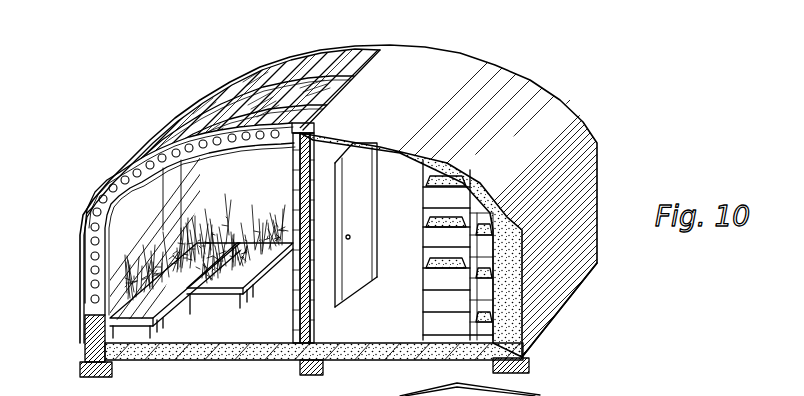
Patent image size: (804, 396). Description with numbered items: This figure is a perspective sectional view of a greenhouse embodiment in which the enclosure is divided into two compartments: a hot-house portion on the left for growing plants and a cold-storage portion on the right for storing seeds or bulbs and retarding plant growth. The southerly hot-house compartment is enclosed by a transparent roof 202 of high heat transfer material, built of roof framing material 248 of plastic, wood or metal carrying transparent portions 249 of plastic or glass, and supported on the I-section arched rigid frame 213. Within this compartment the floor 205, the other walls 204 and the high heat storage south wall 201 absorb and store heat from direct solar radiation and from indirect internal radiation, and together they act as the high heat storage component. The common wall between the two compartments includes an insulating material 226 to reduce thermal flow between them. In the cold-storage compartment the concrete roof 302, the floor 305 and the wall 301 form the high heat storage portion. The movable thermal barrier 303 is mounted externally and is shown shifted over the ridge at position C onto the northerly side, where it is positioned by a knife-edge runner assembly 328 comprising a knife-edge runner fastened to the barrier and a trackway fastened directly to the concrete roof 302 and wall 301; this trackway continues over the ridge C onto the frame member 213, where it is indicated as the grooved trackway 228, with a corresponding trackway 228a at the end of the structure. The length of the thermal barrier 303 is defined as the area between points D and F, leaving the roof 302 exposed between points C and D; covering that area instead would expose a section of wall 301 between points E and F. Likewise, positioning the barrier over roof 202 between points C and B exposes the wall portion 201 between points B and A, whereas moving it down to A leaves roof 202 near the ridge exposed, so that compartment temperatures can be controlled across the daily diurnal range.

The high heat storage south wall 201 is at (107, 333).
The roof 202 is at (258, 76).
The other walls 204 is at (292, 268).
The floor 205 is at (178, 344).
The I-section arched rigid frame 213 is at (93, 194).
The insulating material 226 is at (308, 318).
The grooved trackway 228 is at (80, 231).
The trackway 228a is at (224, 68).
The roof framing material 248 is at (186, 97).
The transparent portions 249 is at (307, 68).
The high heat storage wall 301 is at (510, 307).
The roof 302 is at (455, 168).
The movable thermal barrier 303 is at (575, 96).
The floor 305 is at (438, 343).
The knife-edge runner assembly 328 is at (596, 298).
The point A is at (85, 343).
The point B is at (85, 316).
The ridge point C is at (346, 136).
The point D is at (396, 134).
The point E is at (599, 231).
The point F is at (599, 262).